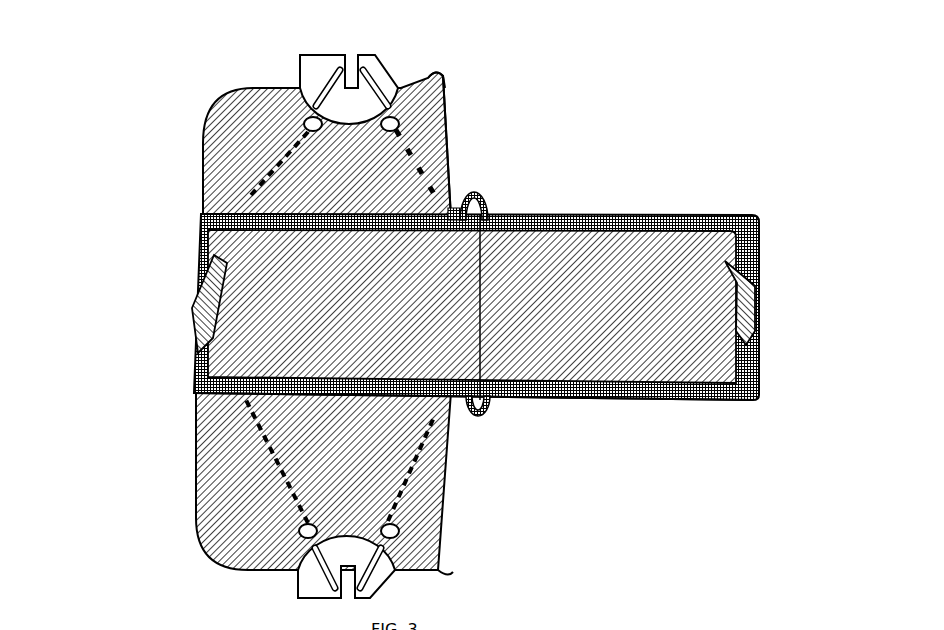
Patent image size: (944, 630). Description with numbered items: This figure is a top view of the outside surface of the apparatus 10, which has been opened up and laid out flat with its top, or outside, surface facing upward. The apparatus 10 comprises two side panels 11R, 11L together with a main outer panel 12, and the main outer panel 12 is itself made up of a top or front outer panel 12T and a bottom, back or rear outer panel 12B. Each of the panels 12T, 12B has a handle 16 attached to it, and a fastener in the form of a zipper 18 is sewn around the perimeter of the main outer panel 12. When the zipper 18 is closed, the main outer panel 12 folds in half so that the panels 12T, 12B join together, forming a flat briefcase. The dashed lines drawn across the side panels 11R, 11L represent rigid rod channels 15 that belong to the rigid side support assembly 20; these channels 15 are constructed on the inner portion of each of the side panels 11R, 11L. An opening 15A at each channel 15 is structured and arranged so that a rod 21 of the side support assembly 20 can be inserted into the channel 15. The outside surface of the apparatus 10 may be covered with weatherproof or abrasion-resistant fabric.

The apparatus 10 is at (610, 148).
The side panel 11R is at (230, 142).
The side panel 11L is at (222, 465).
The main outer panel 12 is at (385, 272).
The top outer panel 12T is at (267, 313).
The bottom outer panel 12B is at (660, 298).
The rigid rod channels 15 is at (432, 145).
The opening 15A is at (427, 93).
The handles 16 is at (747, 300).
The zipper 18 is at (677, 393).
The rigid side support assembly 20 is at (310, 65).
The rod 21 is at (425, 65).